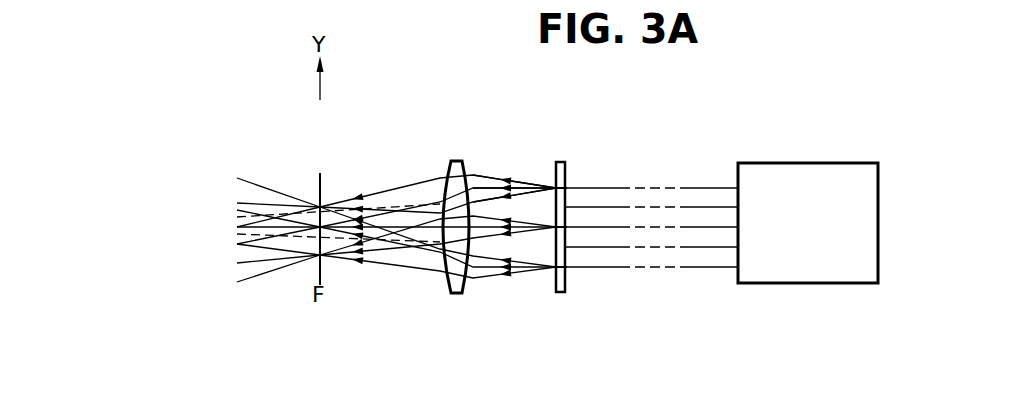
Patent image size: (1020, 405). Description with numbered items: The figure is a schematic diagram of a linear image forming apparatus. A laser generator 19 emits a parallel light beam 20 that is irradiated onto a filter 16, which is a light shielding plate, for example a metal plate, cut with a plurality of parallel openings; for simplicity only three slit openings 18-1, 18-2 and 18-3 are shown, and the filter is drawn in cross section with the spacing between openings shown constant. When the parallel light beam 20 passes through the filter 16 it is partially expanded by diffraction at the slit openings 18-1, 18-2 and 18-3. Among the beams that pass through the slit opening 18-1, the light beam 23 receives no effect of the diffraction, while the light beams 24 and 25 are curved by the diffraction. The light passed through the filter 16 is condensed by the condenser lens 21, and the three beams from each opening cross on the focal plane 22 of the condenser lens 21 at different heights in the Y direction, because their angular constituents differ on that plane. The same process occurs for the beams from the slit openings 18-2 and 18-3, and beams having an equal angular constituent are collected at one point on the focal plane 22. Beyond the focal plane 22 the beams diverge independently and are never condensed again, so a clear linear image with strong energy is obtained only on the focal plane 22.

The filter 16 is at (560, 300).
The slit opening 18-1 is at (567, 188).
The slit opening 18-2 is at (567, 227).
The slit opening 18-3 is at (566, 268).
The laser generator 19 is at (795, 284).
The parallel light beam 20 is at (703, 207).
The condenser lens 21 is at (456, 160).
The focal plane 22 is at (321, 179).
The light beam 23 is at (512, 188).
The light beam 24 is at (480, 176).
The light beam 25 is at (537, 191).